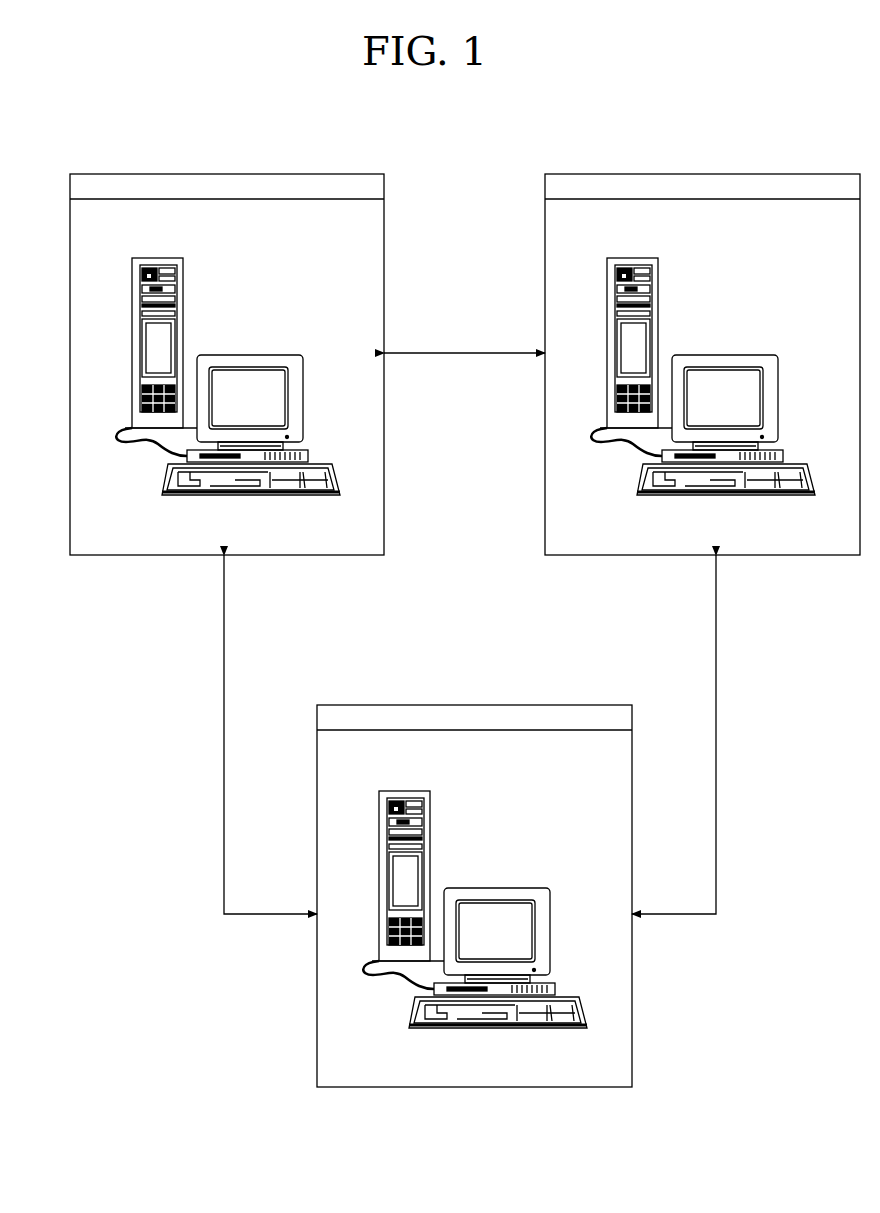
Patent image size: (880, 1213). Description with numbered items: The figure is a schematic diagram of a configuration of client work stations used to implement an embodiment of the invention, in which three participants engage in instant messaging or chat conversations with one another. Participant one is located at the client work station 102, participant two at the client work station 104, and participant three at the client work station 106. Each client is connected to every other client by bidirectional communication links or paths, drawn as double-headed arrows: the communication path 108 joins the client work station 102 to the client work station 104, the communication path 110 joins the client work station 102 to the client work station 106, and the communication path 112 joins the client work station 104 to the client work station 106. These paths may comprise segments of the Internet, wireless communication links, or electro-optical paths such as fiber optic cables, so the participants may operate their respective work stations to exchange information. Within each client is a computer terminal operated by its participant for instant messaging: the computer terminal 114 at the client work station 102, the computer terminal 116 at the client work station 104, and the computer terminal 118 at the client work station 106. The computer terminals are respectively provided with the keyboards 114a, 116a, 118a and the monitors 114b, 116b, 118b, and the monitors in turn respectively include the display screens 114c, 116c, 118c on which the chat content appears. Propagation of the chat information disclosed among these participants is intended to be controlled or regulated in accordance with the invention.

The client work station 102 is at (70, 250).
The client work station 104 is at (545, 250).
The client work station 106 is at (317, 780).
The bidirectional communication link 108 is at (432, 353).
The bidirectional communication link 110 is at (224, 688).
The bidirectional communication link 112 is at (716, 690).
The computer terminal 114 is at (120, 256).
The keyboard 114a is at (167, 470).
The monitor 114b is at (303, 410).
The display screen 114c is at (250, 400).
The computer terminal 116 is at (595, 256).
The keyboard 116a is at (642, 470).
The monitor 116b is at (778, 410).
The display screen 116c is at (725, 400).
The computer terminal 118 is at (367, 787).
The keyboard 118a is at (414, 1003).
The monitor 118b is at (550, 943).
The display screen 118c is at (497, 933).